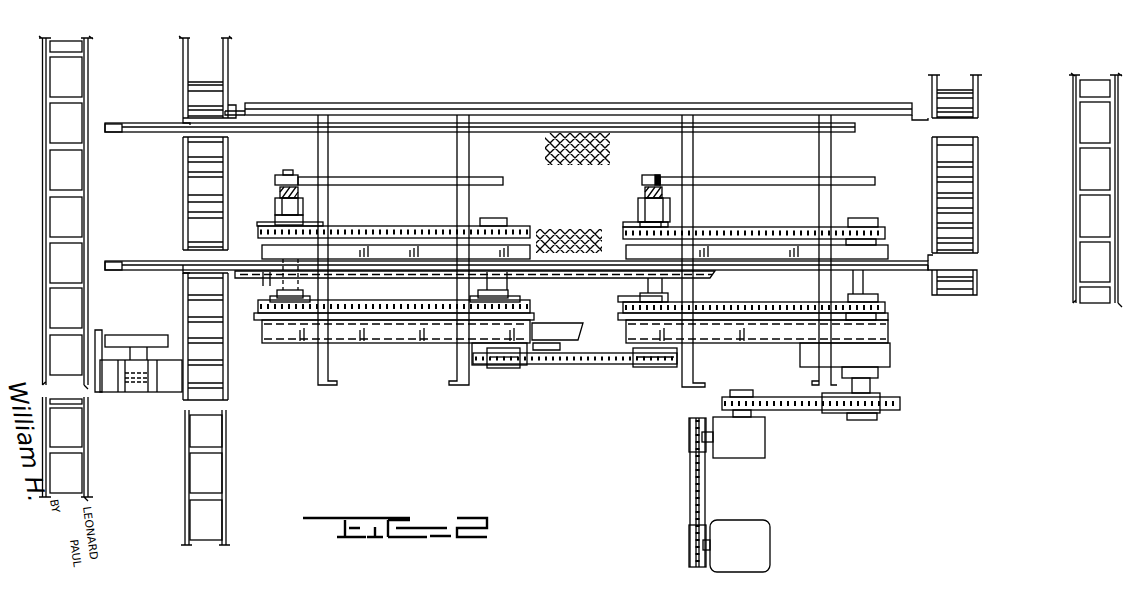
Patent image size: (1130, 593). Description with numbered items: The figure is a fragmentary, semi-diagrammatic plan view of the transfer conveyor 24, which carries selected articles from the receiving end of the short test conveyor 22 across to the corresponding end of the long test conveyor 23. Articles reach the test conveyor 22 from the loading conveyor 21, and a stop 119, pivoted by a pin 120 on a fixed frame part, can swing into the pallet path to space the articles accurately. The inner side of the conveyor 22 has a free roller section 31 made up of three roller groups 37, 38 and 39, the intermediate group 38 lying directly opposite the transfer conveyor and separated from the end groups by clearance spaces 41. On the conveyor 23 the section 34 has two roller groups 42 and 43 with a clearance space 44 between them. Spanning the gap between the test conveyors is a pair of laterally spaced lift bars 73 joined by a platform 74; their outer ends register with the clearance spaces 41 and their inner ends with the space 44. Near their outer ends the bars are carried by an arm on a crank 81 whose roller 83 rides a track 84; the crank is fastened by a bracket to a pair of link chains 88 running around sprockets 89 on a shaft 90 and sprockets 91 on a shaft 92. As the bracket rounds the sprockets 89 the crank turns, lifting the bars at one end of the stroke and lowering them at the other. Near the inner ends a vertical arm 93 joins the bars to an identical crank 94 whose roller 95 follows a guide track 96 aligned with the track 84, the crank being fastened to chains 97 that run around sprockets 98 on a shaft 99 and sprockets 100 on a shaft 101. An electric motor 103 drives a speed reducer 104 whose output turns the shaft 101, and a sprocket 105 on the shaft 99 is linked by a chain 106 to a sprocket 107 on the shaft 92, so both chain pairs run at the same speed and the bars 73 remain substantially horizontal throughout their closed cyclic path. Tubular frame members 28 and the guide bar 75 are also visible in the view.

The loading conveyor 21 is at (188, 457).
The short test conveyor 22 is at (183, 62).
The long test conveyor 23 is at (1077, 68).
The transfer conveyor 24 is at (625, 105).
The tubular frame member 28 is at (62, 177).
The section 31 is at (183, 182).
The section 34 is at (982, 232).
The group of rollers 37 is at (183, 305).
The intermediate group of rollers 38 is at (232, 178).
The group of rollers 39 is at (230, 93).
The clearance spaces 41 is at (183, 118).
The group of rollers 42 is at (970, 195).
The group of rollers 43 is at (958, 83).
The clearance space 44 is at (970, 129).
The lift bars 73 is at (155, 129).
The platform 74 is at (600, 148).
The guide bar 75 is at (467, 123).
The crank 81 is at (300, 190).
The roller 83 is at (283, 176).
The track 84 is at (432, 180).
The link chains 88 is at (413, 221).
The sprockets 89 is at (258, 225).
The shaft 90 is at (295, 280).
The sprockets 91 is at (513, 224).
The shaft 92 is at (493, 280).
The vertical arm 93 is at (672, 220).
The crank 94 is at (648, 192).
The roller 95 is at (663, 167).
The guide track 96 is at (798, 177).
The chains 97 is at (795, 228).
The sprockets 98 is at (630, 225).
The shaft 99 is at (660, 288).
The sprockets 100 is at (880, 220).
The shaft 101 is at (863, 284).
The electric motor 103 is at (765, 549).
The speed reducer 104 is at (758, 442).
The sprocket 105 is at (642, 367).
The chain 106 is at (608, 364).
The sprocket 107 is at (527, 364).
The stop 119 is at (160, 336).
The pin 120 is at (139, 380).